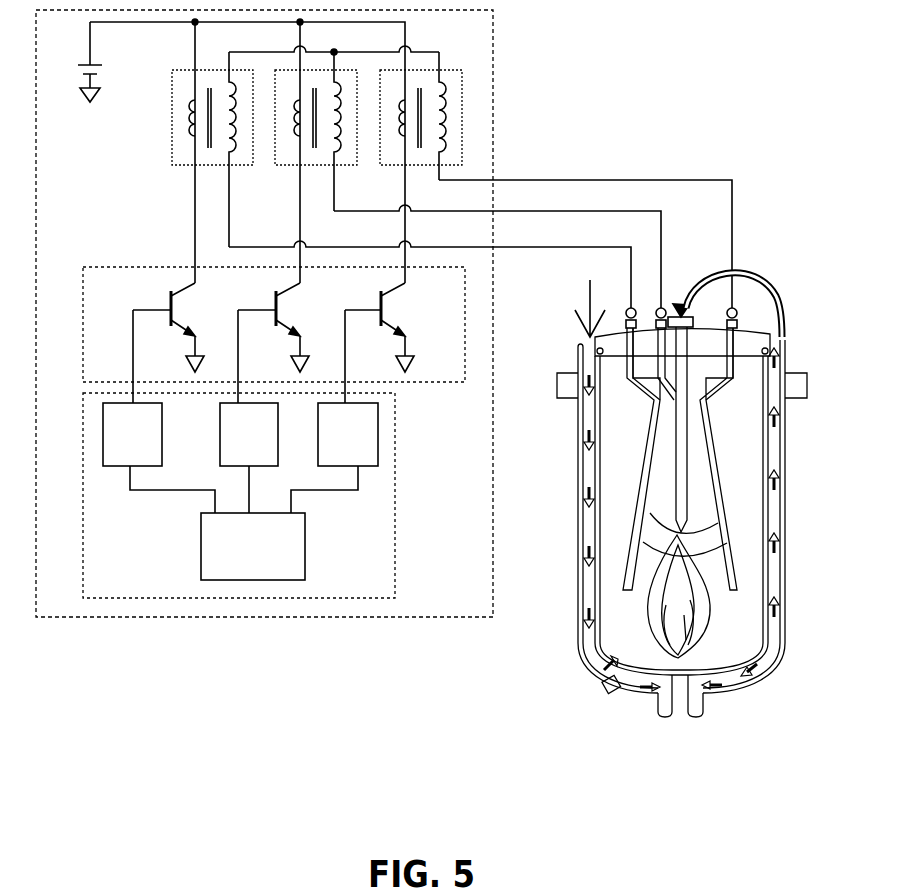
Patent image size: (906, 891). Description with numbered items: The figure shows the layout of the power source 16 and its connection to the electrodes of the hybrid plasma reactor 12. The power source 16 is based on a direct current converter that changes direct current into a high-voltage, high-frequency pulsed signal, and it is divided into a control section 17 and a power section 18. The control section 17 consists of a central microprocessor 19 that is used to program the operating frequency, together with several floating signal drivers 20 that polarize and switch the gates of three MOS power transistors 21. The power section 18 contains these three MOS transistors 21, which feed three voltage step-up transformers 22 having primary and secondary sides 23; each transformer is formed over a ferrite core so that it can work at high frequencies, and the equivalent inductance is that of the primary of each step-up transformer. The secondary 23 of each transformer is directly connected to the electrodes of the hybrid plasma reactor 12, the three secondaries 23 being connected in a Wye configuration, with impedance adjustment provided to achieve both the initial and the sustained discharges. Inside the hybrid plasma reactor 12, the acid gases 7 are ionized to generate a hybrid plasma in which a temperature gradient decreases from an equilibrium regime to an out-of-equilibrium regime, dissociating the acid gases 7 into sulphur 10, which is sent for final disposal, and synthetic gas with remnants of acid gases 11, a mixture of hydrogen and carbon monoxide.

The acid gases 7 is at (588, 306).
The sulphur 10 is at (610, 690).
The synthetic gas with remnants of acid gases 11 is at (683, 717).
The hybrid plasma reactor 12 is at (572, 501).
The power source 16 is at (264, 331).
The control section 17 is at (252, 454).
The power section 18 is at (274, 337).
The central microprocessor 19 is at (253, 546).
The floating signal drivers 20 is at (240, 411).
The MOS power transistors 21 is at (273, 327).
The voltage step-up transformers 22 is at (311, 149).
The primary and secondary sides 23 is at (326, 149).